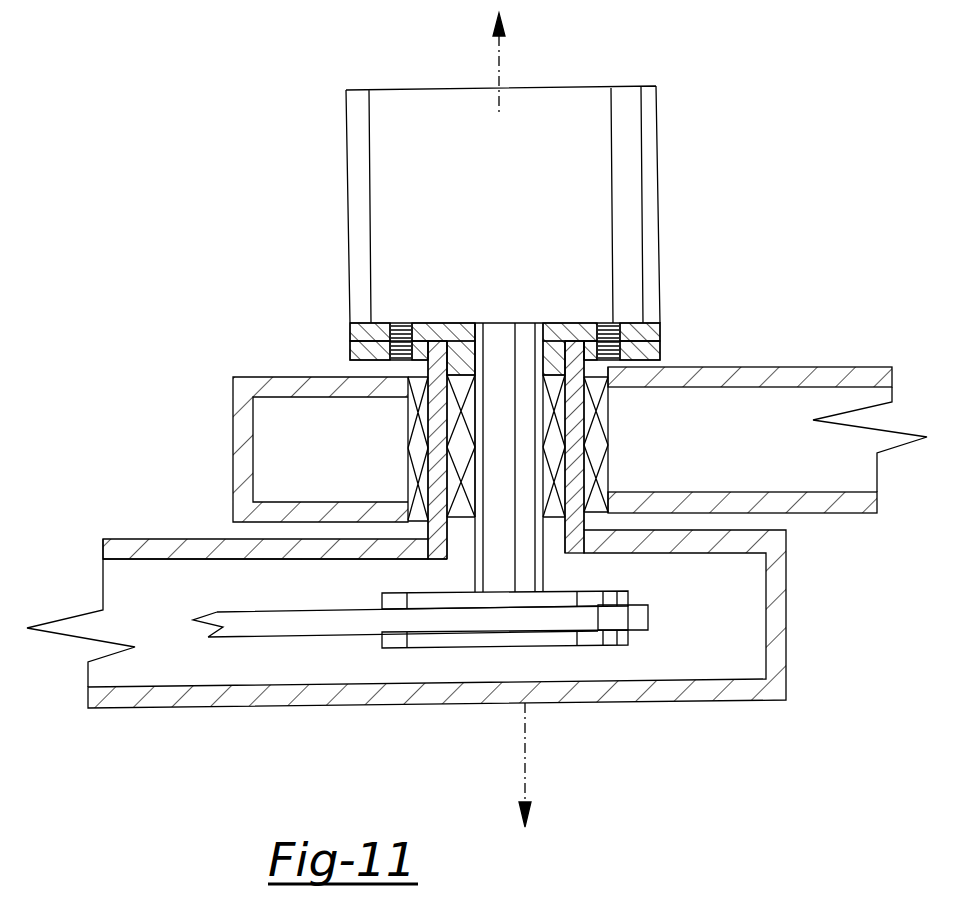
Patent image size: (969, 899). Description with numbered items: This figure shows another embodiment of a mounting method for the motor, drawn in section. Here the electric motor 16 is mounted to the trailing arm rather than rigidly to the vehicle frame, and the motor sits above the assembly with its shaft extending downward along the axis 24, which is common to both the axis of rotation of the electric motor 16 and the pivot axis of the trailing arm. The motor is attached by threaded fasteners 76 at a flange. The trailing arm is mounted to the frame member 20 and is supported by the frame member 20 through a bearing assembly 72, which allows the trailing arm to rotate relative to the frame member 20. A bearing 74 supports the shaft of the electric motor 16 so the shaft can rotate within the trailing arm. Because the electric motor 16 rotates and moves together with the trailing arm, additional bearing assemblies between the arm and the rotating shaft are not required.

The electric motor 16 is at (381, 192).
The frame member 20 is at (697, 377).
The axis 24 is at (526, 765).
The bearing assembly 72 is at (598, 444).
The bearing 74 is at (467, 438).
The threaded fasteners 76 is at (612, 338).